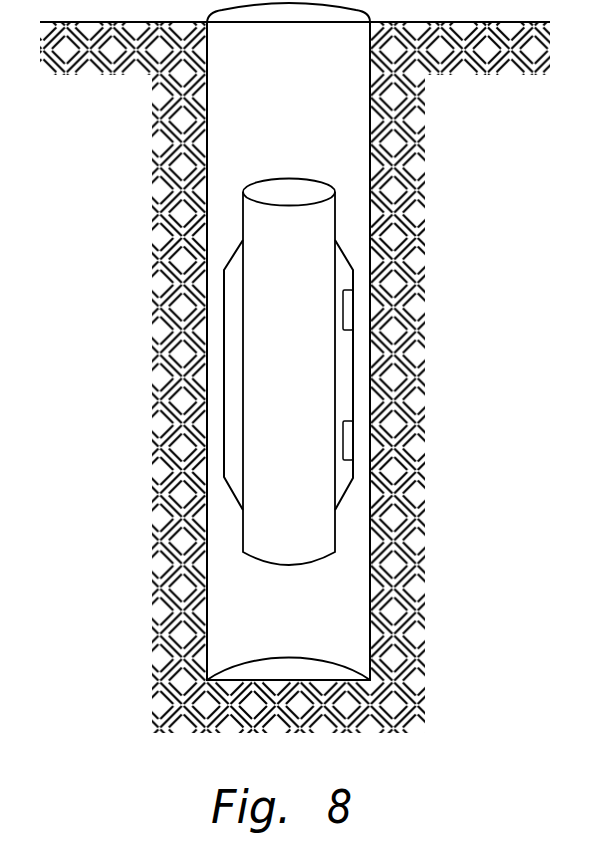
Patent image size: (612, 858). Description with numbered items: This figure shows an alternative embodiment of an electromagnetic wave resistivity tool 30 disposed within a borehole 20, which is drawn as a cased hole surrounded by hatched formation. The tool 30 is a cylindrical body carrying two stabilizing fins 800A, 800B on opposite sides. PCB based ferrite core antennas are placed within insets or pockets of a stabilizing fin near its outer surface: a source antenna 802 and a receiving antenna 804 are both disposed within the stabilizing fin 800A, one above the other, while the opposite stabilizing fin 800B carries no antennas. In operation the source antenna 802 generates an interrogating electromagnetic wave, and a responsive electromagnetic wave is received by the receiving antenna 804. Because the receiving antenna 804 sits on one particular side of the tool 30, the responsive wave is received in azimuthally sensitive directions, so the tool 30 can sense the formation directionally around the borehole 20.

The borehole 20 is at (305, 107).
The tool 30 is at (315, 221).
The stabilizing fin 800A is at (348, 373).
The stabilizing fin 800B is at (232, 371).
The source antenna 802 is at (349, 310).
The receiving antenna 804 is at (349, 442).